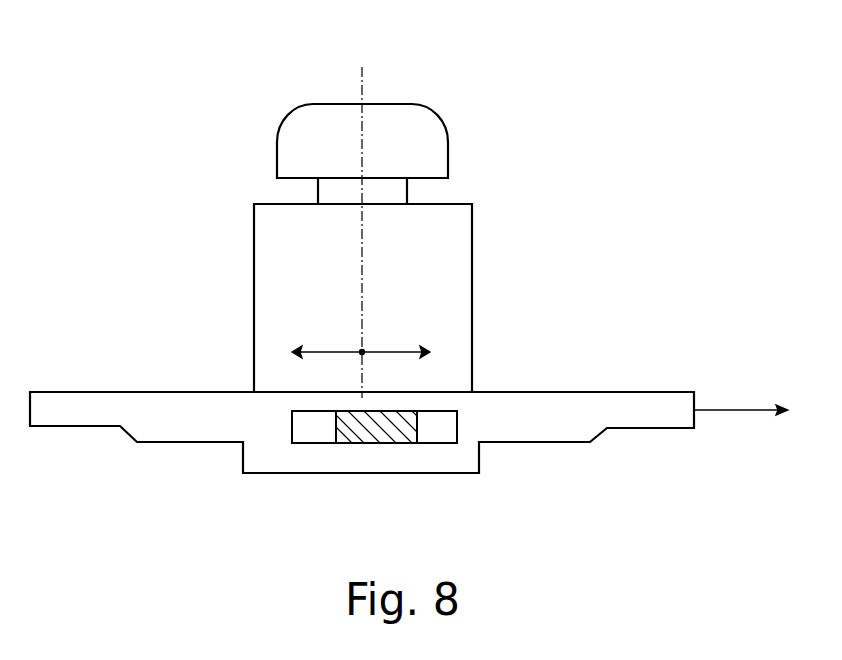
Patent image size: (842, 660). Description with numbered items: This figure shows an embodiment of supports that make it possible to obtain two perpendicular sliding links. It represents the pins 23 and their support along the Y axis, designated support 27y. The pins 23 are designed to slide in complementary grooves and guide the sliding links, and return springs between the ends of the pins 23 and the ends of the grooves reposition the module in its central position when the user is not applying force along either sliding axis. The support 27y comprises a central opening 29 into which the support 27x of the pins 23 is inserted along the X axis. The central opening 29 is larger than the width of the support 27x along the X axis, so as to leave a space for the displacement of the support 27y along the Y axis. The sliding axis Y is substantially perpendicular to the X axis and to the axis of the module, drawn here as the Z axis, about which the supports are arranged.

The pins 23 is at (59, 399).
The support along the X axis 27x is at (353, 436).
The support along the Y axis 27y is at (468, 463).
The central opening 29 is at (432, 438).
The Z axis Z is at (361, 80).
The Y axis Y is at (741, 426).